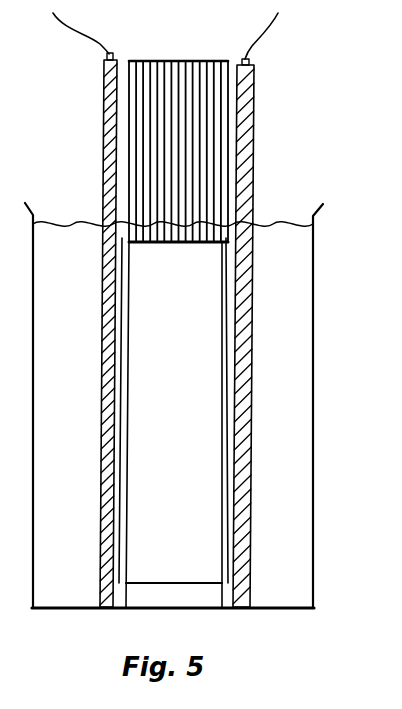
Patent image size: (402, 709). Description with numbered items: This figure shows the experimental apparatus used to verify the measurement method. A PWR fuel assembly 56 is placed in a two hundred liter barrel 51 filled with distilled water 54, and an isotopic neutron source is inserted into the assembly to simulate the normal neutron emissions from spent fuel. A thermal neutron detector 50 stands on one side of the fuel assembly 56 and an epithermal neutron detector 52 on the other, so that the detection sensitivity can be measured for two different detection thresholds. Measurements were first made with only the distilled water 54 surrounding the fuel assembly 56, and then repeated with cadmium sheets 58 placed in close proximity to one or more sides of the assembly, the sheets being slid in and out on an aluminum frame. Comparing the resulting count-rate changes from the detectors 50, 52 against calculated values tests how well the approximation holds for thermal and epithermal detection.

The thermal neutron detector 50 is at (105, 128).
The barrel 51 is at (315, 323).
The epithermal neutron detector 52 is at (257, 122).
The distilled water 54 is at (278, 588).
The PWR fuel assembly 56 is at (191, 60).
The cadmium sheet 58 is at (172, 473).